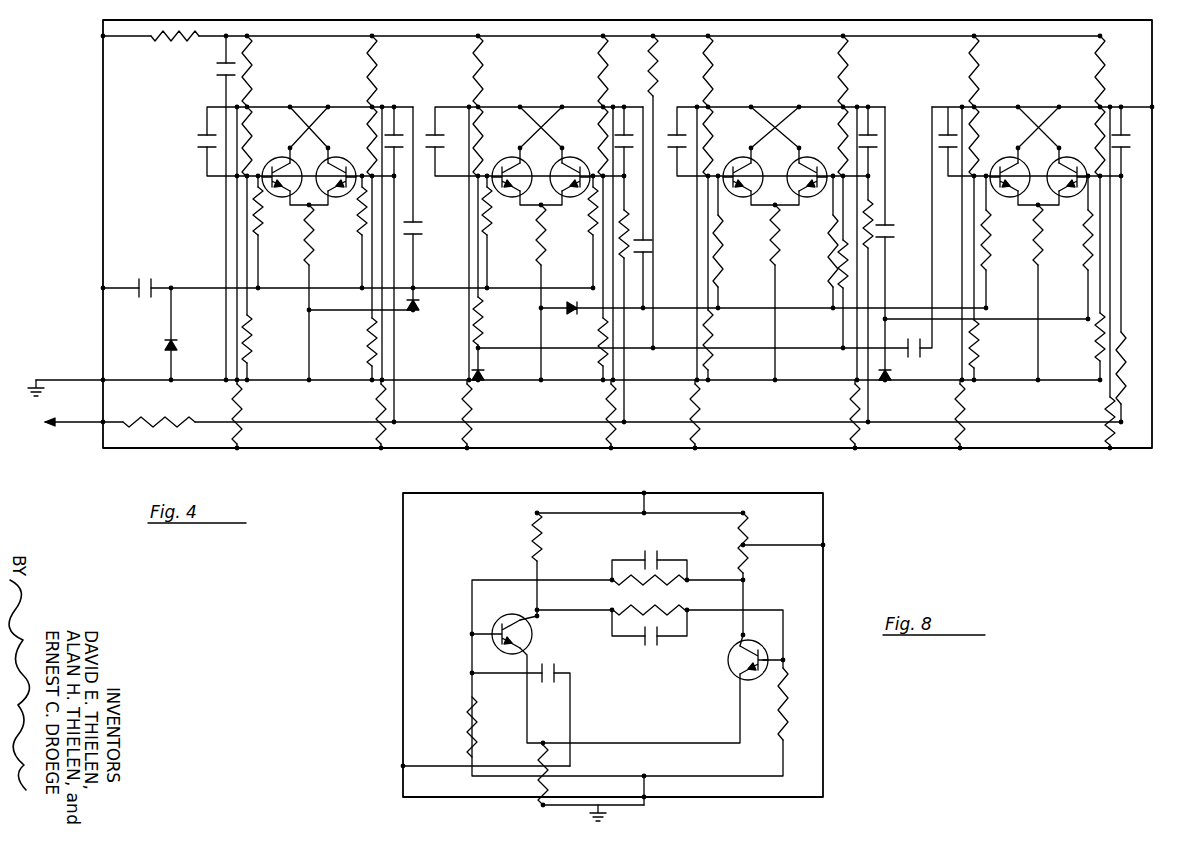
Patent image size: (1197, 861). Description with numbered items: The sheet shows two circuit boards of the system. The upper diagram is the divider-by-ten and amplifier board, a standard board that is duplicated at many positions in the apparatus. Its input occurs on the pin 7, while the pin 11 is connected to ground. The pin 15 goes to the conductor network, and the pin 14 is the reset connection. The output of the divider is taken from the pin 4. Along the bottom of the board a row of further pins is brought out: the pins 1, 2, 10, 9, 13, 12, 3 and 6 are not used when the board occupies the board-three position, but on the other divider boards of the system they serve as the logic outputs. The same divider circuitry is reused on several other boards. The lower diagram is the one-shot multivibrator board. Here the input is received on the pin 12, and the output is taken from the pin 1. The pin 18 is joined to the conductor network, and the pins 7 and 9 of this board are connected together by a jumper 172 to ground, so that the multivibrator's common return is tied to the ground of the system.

In FIG. 4, the pin 15 is at (103, 36).
In FIG. 4, the pin 7 is at (103, 288).
In FIG. 8, the pin 7 is at (543, 805).
In FIG. 4, the pin 11 is at (102, 380).
In FIG. 4, the pin 14 is at (102, 422).
In FIG. 4, the pin 4 is at (1152, 107).
In FIG. 4, the pin 6 is at (237, 450).
In FIG. 4, the pin 3 is at (381, 450).
In FIG. 4, the pin 12 is at (467, 450).
In FIG. 8, the pin 12 is at (403, 766).
In FIG. 4, the pin 13 is at (611, 450).
In FIG. 4, the pin 9 is at (695, 450).
In FIG. 8, the pin 9 is at (644, 805).
In FIG. 4, the pin 10 is at (855, 450).
In FIG. 4, the pin 2 is at (960, 450).
In FIG. 4, the pin 1 is at (1110, 450).
In FIG. 8, the pin 1 is at (823, 545).
In FIG. 8, the pin 18 is at (644, 491).
In FIG. 8, the jumper 172 is at (598, 808).